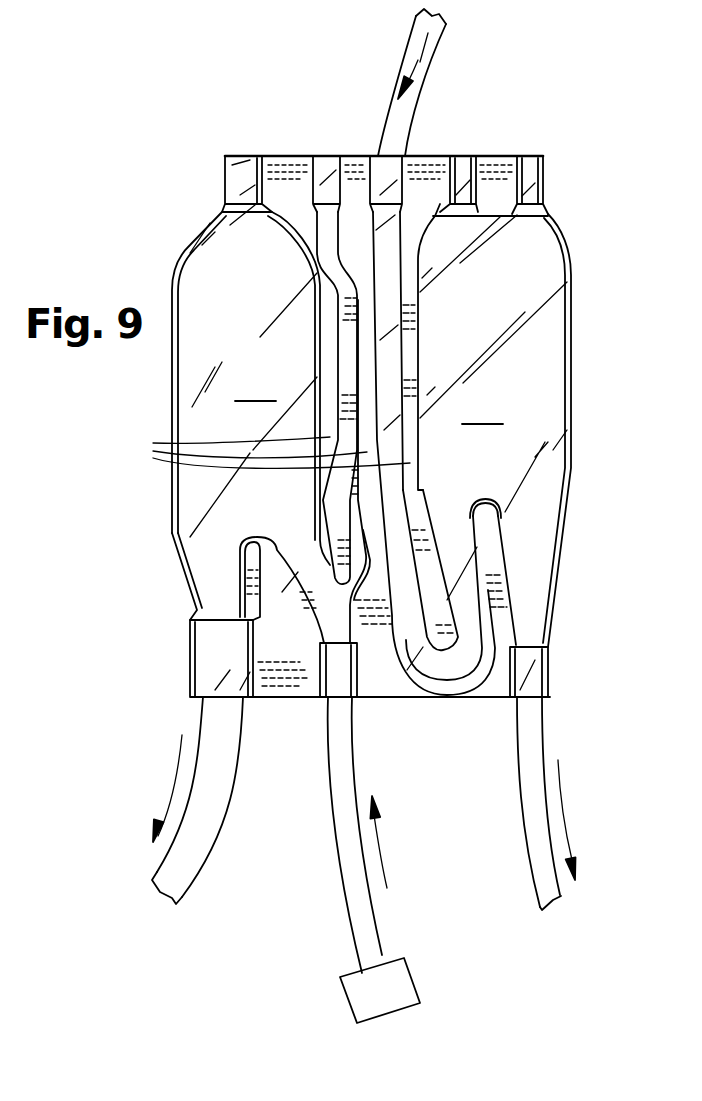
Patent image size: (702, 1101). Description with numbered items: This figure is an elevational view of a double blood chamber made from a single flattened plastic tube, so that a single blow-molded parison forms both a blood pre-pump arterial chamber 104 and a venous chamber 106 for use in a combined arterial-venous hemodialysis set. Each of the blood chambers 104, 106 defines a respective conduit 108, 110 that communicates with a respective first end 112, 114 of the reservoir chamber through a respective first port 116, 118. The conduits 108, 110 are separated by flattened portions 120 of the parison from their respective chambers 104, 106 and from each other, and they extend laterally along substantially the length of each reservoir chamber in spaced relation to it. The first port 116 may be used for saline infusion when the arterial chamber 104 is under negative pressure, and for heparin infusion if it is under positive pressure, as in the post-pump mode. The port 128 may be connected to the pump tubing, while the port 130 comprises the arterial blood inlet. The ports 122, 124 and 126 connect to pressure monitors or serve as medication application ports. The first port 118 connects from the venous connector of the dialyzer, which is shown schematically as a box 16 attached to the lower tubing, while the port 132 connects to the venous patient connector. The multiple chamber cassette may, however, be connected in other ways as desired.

The dialyzer 16 is at (398, 1003).
The arterial chamber 104 is at (251, 449).
The venous chamber 106 is at (487, 442).
The conduit 108 is at (344, 228).
The conduit 110 is at (393, 268).
The first end 112 is at (205, 217).
The first end 114 is at (437, 240).
The first port 116 is at (325, 167).
The first port 118 is at (396, 186).
The flattened portions 120 is at (156, 450).
The port 122 is at (240, 173).
The port 124 is at (462, 170).
The port 126 is at (532, 162).
The port 128 is at (210, 678).
The port 130 is at (333, 680).
The port 132 is at (537, 683).